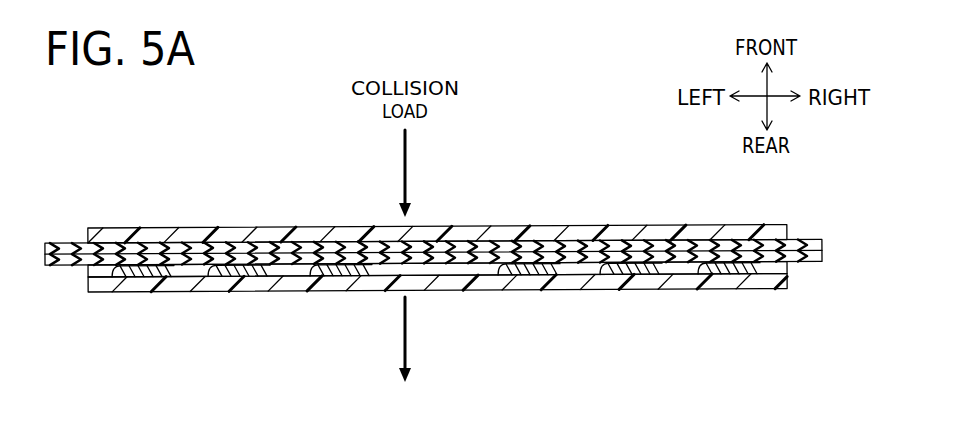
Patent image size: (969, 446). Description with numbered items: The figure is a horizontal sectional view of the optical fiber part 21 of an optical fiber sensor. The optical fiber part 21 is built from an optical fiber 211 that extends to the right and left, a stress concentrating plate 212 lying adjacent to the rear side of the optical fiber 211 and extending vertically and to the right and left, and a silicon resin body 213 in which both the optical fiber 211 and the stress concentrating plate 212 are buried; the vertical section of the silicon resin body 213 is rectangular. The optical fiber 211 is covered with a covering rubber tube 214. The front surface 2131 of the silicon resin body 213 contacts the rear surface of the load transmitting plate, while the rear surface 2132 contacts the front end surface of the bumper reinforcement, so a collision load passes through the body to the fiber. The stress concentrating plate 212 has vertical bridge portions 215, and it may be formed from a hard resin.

The optical fiber part 21 is at (455, 255).
The optical fiber 211 is at (455, 225).
The stress concentrating plate 212 is at (437, 307).
The silicon resin body 213 is at (437, 259).
The front surface 2131 is at (430, 227).
The rear surface 2132 is at (280, 291).
The covering rubber tube 214 is at (811, 237).
The vertical bridge portions 215 is at (517, 272).